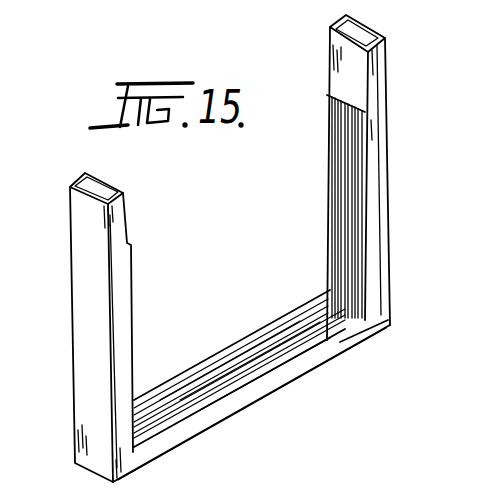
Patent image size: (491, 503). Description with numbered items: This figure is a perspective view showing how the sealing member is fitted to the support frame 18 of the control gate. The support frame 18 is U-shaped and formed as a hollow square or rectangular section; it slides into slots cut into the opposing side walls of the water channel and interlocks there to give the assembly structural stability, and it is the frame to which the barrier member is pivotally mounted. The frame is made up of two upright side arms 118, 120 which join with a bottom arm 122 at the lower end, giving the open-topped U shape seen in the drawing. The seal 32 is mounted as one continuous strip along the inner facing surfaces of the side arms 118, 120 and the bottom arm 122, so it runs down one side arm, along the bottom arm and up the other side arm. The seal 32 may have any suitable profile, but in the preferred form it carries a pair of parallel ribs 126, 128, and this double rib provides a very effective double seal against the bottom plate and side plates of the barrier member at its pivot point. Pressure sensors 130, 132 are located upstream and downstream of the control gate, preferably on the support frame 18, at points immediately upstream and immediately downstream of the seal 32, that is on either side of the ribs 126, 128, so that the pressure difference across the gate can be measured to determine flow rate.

The support frame 18 is at (400, 102).
The seal 32 is at (368, 167).
The side arm 118 is at (88, 337).
The side arm 120 is at (380, 229).
The bottom arm 122 is at (273, 387).
The rib 126 is at (248, 358).
The rib 128 is at (305, 342).
The pressure sensor 130 is at (343, 247).
The pressure sensor 132 is at (362, 275).